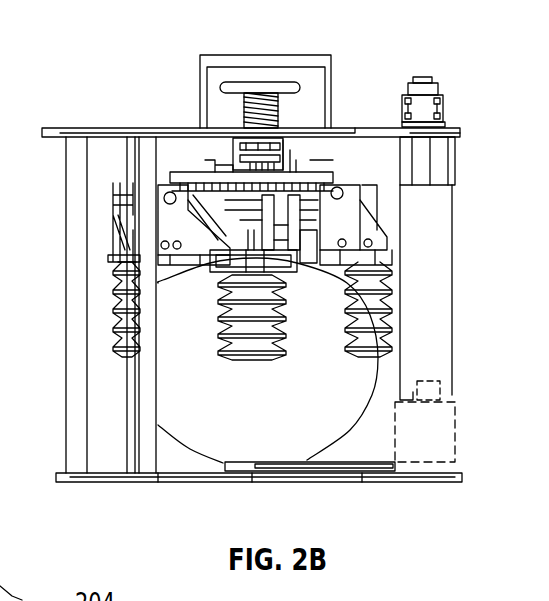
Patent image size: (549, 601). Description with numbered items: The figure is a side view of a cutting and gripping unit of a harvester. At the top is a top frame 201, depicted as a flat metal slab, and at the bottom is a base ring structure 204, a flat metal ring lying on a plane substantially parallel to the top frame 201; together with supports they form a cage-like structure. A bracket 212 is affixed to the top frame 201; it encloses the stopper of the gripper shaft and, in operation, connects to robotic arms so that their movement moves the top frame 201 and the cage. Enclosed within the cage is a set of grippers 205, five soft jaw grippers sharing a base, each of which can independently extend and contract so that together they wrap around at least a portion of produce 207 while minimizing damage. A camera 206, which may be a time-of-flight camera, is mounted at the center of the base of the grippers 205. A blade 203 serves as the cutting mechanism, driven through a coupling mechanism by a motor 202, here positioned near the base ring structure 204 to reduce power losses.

The top frame 201 is at (108, 128).
The motor 202 is at (447, 95).
The blade 203 is at (283, 478).
The base ring structure 204 is at (440, 482).
The set of grippers 205 is at (357, 233).
The camera 206 is at (300, 147).
The produce 207 is at (177, 360).
The bracket 212 is at (268, 55).